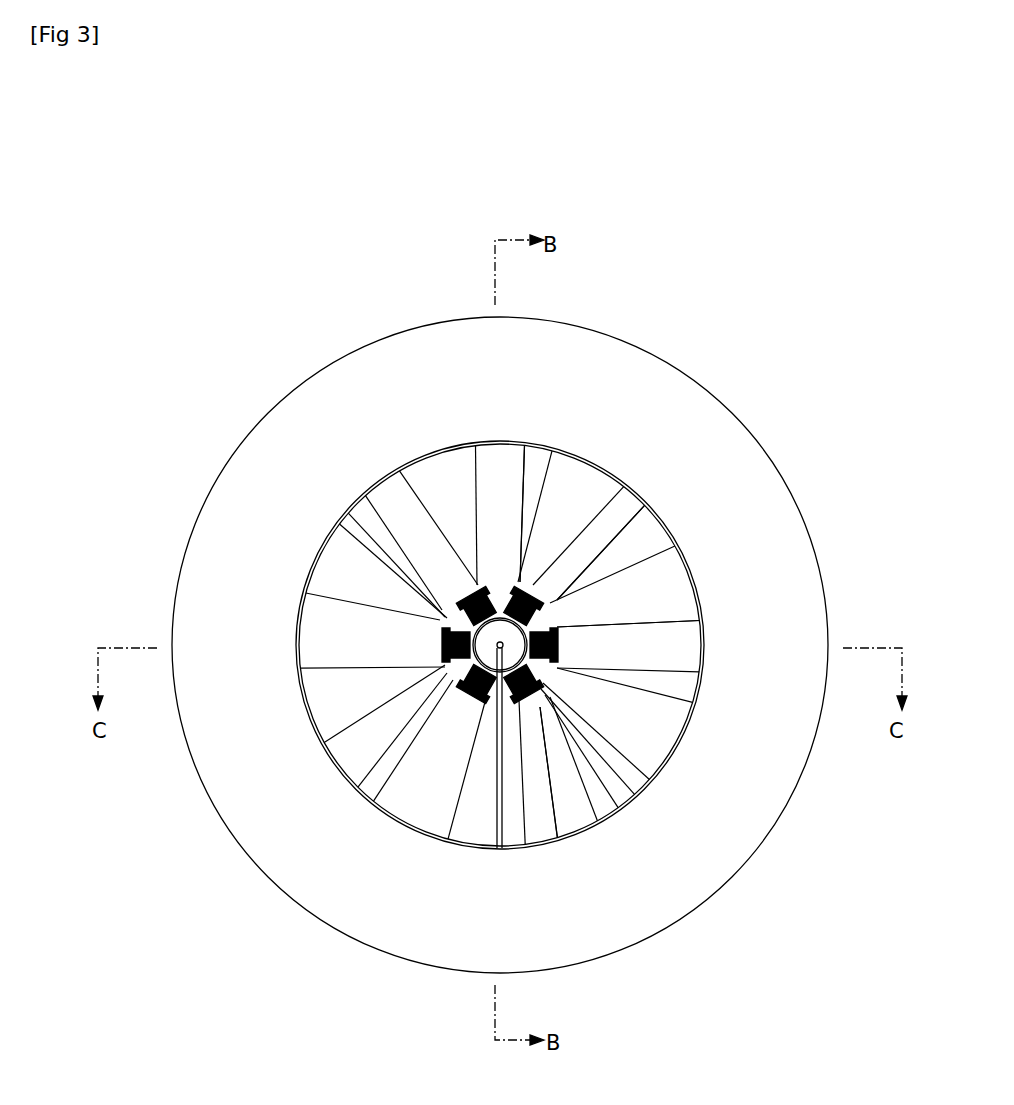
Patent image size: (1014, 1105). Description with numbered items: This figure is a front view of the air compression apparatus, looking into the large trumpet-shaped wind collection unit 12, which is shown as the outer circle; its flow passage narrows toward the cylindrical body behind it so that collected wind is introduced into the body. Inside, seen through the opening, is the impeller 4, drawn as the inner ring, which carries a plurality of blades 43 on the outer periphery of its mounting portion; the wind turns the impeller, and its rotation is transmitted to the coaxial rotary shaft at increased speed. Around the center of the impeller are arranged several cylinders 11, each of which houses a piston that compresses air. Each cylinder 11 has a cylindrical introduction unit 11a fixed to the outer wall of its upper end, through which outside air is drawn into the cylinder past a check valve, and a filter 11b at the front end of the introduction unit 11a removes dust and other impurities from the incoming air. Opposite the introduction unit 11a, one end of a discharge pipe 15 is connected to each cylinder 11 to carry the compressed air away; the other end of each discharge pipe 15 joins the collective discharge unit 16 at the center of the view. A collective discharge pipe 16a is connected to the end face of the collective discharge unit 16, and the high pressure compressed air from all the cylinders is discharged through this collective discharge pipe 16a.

The impeller 4 is at (328, 576).
The cylinder 11 is at (545, 560).
The introduction unit 11a is at (570, 623).
The filter 11b is at (552, 600).
The wind collection unit 12 is at (704, 388).
The discharge pipe 15 is at (498, 590).
The collective discharge unit 16 is at (480, 668).
The collective discharge pipe 16a is at (500, 823).
The blade 43 is at (442, 485).